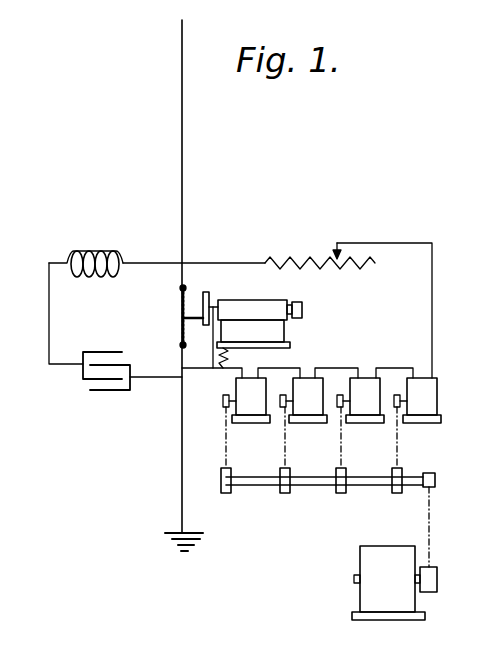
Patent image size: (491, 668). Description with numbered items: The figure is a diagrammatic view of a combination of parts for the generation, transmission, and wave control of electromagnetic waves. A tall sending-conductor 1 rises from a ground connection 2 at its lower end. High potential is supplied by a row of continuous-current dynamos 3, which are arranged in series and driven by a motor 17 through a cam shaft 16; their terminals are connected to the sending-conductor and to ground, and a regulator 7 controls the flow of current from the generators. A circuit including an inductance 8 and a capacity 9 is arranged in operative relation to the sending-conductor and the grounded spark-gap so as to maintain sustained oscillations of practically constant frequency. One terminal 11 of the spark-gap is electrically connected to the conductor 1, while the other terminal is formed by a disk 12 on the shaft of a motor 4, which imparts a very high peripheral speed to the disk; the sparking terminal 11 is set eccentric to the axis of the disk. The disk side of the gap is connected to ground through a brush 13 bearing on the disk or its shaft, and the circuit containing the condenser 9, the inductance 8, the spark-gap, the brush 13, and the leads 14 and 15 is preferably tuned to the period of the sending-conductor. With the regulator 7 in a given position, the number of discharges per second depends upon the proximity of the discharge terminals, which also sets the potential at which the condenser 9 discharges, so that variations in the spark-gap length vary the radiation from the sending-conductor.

The conductor 1 is at (182, 163).
The ground connection 2 is at (182, 497).
The continuous-current dynamos 3 is at (331, 435).
The motor 4 is at (276, 301).
The regulator 7 is at (302, 260).
The inductance 8 is at (97, 249).
The capacity 9 is at (106, 385).
The terminal 11 is at (193, 316).
The disk 12 is at (210, 298).
The brush 13 is at (197, 346).
The lead 14 is at (167, 283).
The lead 15 is at (307, 320).
The cam shaft 16 is at (435, 480).
The motor 17 is at (437, 583).